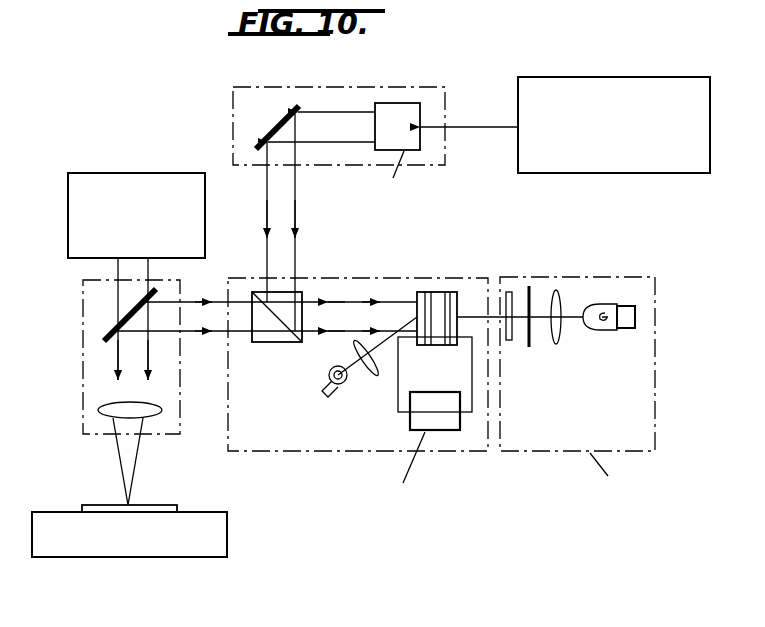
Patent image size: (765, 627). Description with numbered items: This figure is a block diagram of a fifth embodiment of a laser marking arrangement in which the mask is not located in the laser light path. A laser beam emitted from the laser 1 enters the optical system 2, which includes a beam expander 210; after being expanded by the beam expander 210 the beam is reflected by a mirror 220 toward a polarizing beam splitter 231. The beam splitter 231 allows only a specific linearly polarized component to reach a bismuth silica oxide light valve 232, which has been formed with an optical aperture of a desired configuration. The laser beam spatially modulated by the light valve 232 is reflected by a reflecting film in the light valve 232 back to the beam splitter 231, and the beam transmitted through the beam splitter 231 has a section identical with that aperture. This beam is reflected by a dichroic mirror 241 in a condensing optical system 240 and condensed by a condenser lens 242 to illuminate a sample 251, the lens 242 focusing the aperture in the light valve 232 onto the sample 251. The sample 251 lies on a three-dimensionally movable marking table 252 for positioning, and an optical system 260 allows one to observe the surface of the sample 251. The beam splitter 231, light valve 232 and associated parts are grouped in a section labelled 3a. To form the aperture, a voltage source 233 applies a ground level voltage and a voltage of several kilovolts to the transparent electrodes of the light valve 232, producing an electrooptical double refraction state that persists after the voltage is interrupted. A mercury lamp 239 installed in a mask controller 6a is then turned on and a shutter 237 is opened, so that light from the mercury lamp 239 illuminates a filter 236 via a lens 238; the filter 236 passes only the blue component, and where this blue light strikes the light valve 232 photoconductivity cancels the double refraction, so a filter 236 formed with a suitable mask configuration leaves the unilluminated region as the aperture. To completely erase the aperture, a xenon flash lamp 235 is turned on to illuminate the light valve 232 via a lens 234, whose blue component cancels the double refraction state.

The laser 1 is at (615, 76).
The optical system 2 is at (334, 70).
The beam expander 210 is at (410, 102).
The mirror 220 is at (258, 142).
The optical system 260 is at (156, 152).
The condensing optical system 240 is at (83, 306).
The dichroic mirror 241 is at (105, 340).
The condenser lens 242 is at (98, 411).
The sample 251 is at (97, 505).
The marking table 252 is at (181, 558).
The modulation section 3a is at (298, 452).
The polarizing beam splitter 231 is at (300, 292).
The light valve 232 is at (452, 264).
The voltage source 233 is at (442, 432).
The lens 234 is at (366, 374).
The xenon flash lamp 235 is at (322, 392).
The mask controller 6a is at (606, 403).
The filter 236 is at (510, 292).
The shutter 237 is at (531, 342).
The lens 238 is at (556, 292).
The mercury lamp 239 is at (635, 304).